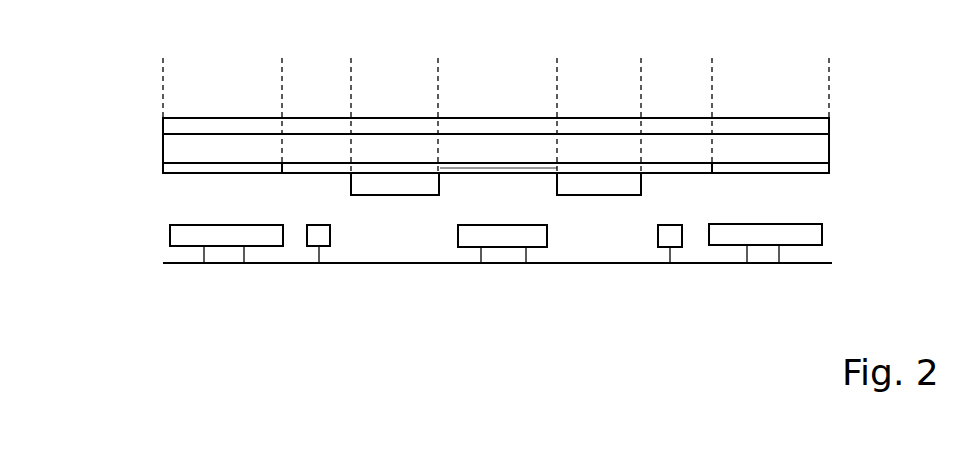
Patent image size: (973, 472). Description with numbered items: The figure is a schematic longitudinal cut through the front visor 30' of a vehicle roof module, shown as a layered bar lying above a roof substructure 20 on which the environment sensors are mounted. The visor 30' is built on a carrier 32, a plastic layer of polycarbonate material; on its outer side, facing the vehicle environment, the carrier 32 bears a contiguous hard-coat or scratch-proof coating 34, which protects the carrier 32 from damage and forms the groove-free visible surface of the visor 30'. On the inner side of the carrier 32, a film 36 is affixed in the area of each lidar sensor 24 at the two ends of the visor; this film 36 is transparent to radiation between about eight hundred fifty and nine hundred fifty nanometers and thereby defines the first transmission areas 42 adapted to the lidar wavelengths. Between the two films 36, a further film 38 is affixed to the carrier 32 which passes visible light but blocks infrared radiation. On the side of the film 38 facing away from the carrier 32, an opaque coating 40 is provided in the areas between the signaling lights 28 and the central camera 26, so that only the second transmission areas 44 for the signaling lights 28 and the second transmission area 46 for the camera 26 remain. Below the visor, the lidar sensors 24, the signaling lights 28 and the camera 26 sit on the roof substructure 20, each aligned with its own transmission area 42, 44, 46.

The roof substructure 20 is at (393, 263).
The lidar sensor 24 is at (192, 236).
The camera 26 is at (518, 235).
The signaling light 28 is at (322, 236).
The visor 30' is at (565, 150).
The carrier 32 is at (192, 153).
The scratch-proof coating 34 is at (807, 128).
The film 36 is at (183, 168).
The film 38 is at (534, 168).
The opaque coating 40 is at (415, 183).
The first transmission area 42 is at (249, 109).
The second transmission area 44 is at (338, 109).
The second transmission area 46 is at (511, 109).